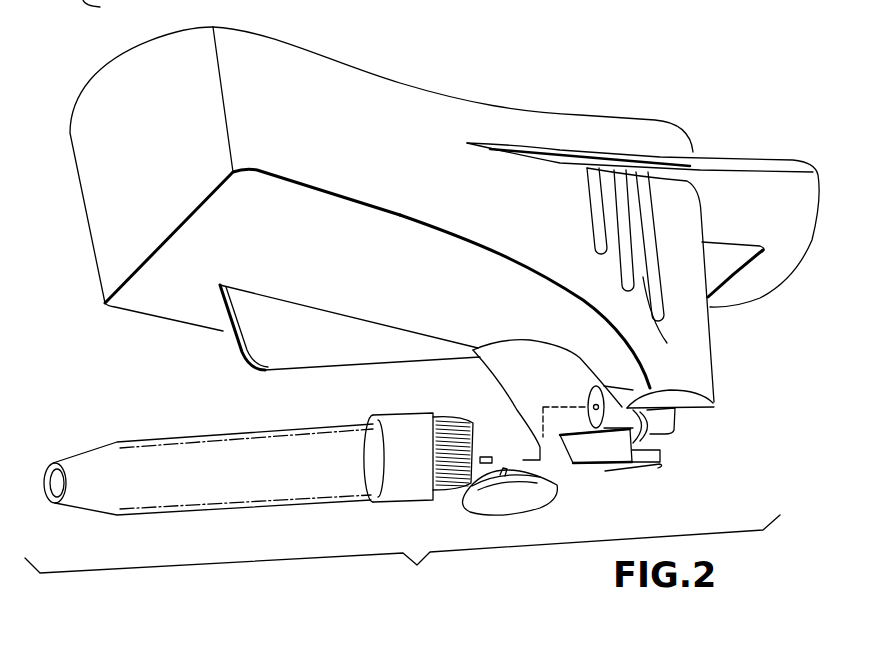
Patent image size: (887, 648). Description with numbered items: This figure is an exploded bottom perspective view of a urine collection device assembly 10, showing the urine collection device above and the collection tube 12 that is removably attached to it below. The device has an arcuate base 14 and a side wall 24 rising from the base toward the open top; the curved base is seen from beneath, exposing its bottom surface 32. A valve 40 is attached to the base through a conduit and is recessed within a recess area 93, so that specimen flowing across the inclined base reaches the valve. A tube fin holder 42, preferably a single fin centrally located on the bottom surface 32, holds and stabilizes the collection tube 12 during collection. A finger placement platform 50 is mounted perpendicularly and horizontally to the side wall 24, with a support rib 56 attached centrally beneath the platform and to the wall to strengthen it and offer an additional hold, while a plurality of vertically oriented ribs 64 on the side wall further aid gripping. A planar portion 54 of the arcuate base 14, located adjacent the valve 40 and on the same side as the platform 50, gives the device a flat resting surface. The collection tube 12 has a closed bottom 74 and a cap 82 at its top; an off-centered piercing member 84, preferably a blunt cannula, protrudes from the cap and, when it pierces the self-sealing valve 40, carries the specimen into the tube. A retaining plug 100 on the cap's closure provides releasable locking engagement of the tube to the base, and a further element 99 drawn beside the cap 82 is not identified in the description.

The urine collection device assembly 10 is at (402, 555).
The collection tube 12 is at (252, 517).
The arcuate base 14 is at (433, 227).
The side wall 24 is at (255, 88).
The bottom surface 32 is at (290, 252).
The valve 40 is at (640, 463).
The tube fin holder 42 is at (257, 342).
The finger placement platform 50 is at (793, 160).
The planar portion 54 is at (608, 468).
The support rib 56 is at (720, 257).
The ribs 64 is at (663, 300).
The closed bottom 74 is at (107, 10).
The cap 82 is at (407, 413).
The piercing member 84 is at (485, 458).
The recess area 93 is at (520, 353).
The spring clip 99 is at (520, 502).
The retaining plug 100 is at (517, 463).